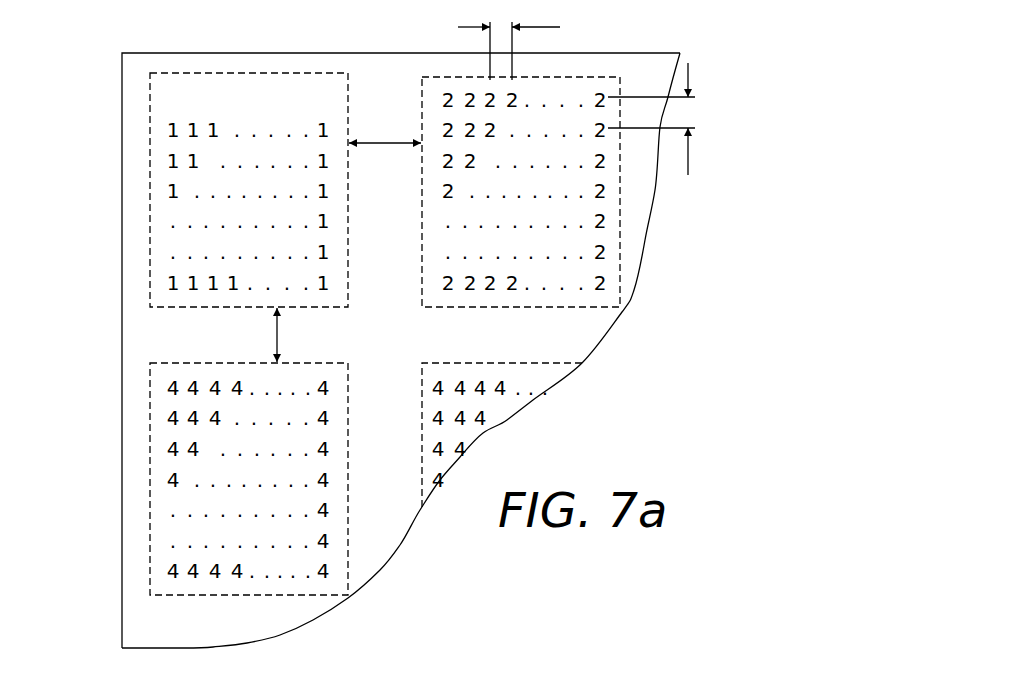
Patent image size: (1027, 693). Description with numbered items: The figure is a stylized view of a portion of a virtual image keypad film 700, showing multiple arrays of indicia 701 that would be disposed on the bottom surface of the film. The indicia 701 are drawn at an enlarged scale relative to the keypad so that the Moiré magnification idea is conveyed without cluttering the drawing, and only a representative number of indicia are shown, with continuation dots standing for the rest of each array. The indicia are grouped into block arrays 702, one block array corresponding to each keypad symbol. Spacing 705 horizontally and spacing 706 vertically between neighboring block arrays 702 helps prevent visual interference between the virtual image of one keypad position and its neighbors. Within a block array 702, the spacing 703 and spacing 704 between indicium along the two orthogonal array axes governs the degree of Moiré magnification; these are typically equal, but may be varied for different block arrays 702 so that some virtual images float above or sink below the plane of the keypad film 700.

The virtual image keypad film 700 is at (193, 634).
The indicia 701 is at (170, 101).
The block arrays 702 is at (150, 258).
The spacing between indicia along first array axis 703 is at (533, 48).
The spacing between indicia along second array axis 704 is at (661, 133).
The spacing between block arrays 705 is at (385, 145).
The spacing between block arrays 706 is at (280, 340).